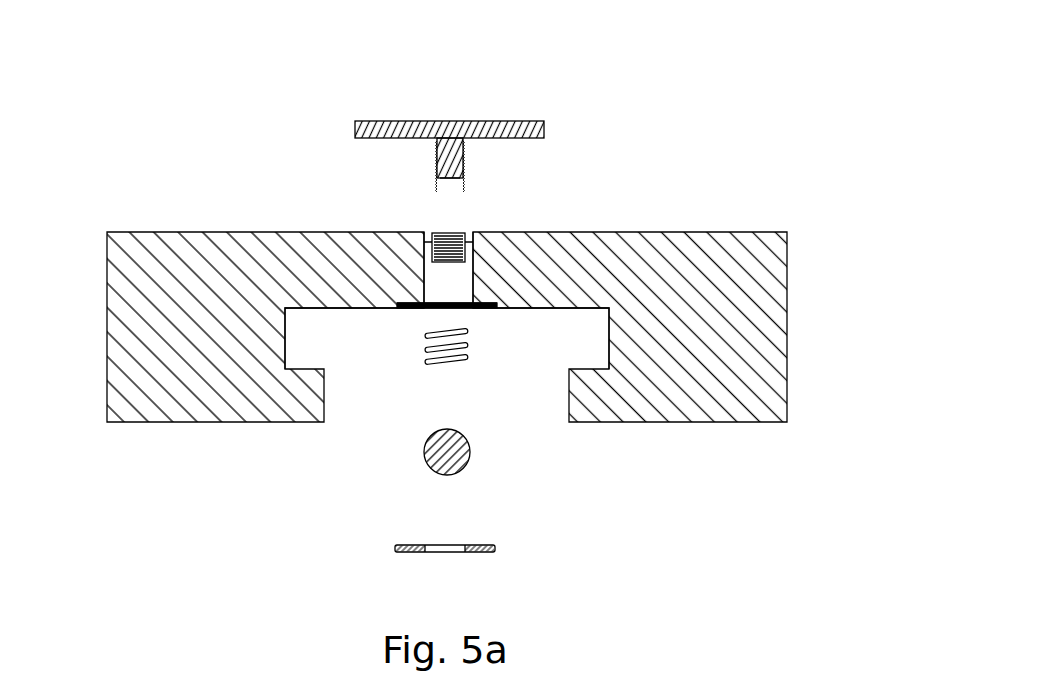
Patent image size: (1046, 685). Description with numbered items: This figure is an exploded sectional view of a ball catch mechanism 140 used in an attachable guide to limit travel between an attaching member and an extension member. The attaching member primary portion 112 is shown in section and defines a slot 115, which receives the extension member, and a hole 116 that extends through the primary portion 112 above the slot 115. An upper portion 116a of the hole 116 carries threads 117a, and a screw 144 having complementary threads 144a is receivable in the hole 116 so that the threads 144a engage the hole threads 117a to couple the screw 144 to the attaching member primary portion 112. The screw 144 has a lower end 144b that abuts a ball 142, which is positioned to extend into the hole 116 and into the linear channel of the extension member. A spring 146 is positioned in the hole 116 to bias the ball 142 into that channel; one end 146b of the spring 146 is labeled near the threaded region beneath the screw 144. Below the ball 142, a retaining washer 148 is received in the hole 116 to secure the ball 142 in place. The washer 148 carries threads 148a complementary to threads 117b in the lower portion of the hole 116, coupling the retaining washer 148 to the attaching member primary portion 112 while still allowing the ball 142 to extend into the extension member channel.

The attaching member primary portion 112 is at (737, 234).
The attaching member slot 115 is at (517, 399).
The hole 116 is at (472, 273).
The upper portion of the hole 116a is at (520, 210).
The hole threads 117a is at (424, 232).
The hole threads 117b is at (487, 308).
The ball catch mechanism 140 is at (508, 124).
The ball 142 is at (467, 462).
The screw 144 is at (500, 108).
The screw threads 144a is at (463, 160).
The lower end of the screw 144b is at (447, 180).
The spring 146 is at (425, 364).
The spring upper end 146b is at (392, 295).
The retaining washer 148 is at (404, 569).
The retaining washer threads 148a is at (395, 548).